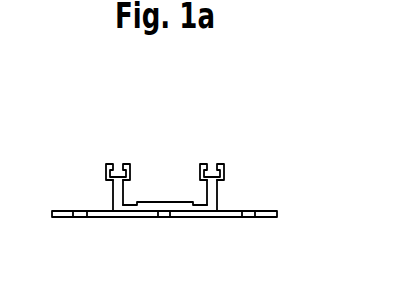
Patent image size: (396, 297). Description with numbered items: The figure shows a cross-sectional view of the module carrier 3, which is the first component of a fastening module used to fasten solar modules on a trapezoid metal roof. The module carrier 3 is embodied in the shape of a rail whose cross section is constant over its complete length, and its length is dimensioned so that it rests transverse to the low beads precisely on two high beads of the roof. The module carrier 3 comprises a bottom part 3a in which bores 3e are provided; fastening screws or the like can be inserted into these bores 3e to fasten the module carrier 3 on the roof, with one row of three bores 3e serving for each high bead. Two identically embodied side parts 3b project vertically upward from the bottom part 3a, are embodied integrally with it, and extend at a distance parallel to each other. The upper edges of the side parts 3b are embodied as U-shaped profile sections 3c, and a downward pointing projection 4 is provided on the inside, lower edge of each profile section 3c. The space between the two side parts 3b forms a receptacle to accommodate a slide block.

The module carrier 3 is at (302, 136).
The bottom part 3a is at (213, 217).
The side parts 3b is at (108, 182).
The U-shaped profile sections 3c is at (124, 163).
The bores 3e is at (78, 217).
The projection 4 is at (205, 182).